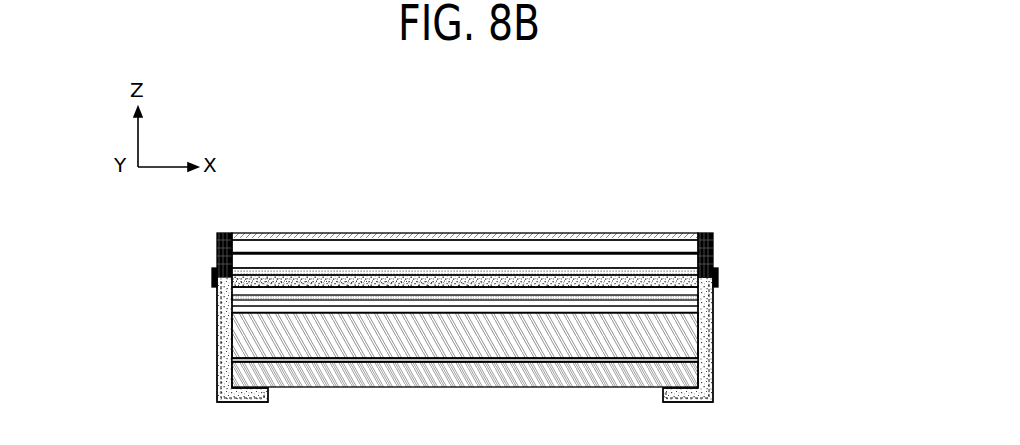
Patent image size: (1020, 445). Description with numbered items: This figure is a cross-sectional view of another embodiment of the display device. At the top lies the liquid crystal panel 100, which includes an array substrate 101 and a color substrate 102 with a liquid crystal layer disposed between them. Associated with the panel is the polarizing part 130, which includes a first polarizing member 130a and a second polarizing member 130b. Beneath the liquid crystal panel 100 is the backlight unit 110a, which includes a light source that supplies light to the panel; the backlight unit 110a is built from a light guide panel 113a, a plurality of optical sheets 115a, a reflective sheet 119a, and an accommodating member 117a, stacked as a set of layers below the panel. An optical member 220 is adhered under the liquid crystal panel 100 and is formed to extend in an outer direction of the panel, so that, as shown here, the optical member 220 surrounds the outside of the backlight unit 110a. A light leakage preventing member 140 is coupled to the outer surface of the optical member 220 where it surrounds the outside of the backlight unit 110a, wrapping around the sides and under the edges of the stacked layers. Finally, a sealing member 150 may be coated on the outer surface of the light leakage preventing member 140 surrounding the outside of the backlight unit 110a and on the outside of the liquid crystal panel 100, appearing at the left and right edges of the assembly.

The liquid crystal panel 100 is at (465, 194).
The array substrate 101 is at (328, 258).
The color substrate 102 is at (384, 247).
The polarizing part 130 is at (465, 206).
The first polarizing member 130a is at (503, 273).
The second polarizing member 130b is at (570, 236).
The optical member 220 is at (633, 282).
The sealing member 150 is at (212, 276).
The light leakage preventing member 140 is at (215, 370).
The backlight unit 110a is at (542, 346).
The optical sheets 115a is at (704, 303).
The light guide panel 113a is at (685, 328).
The reflective sheet 119a is at (677, 357).
The accommodating member 117a is at (683, 378).